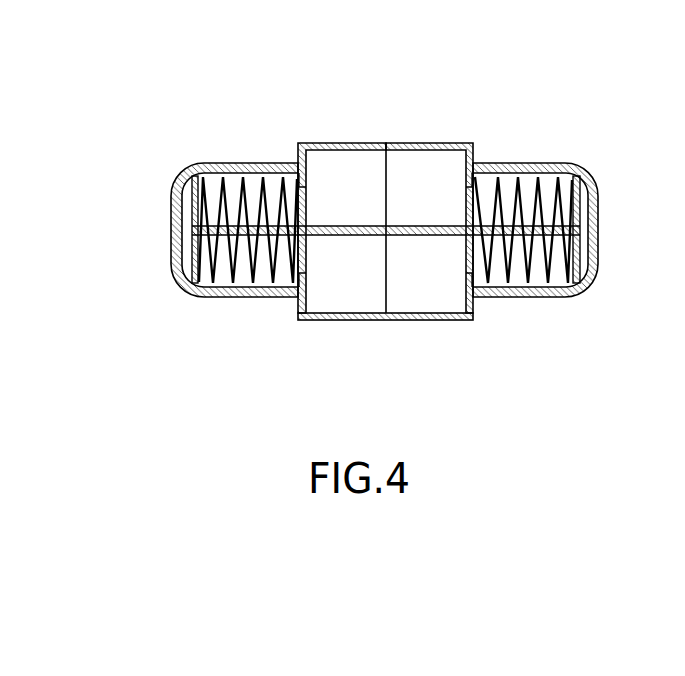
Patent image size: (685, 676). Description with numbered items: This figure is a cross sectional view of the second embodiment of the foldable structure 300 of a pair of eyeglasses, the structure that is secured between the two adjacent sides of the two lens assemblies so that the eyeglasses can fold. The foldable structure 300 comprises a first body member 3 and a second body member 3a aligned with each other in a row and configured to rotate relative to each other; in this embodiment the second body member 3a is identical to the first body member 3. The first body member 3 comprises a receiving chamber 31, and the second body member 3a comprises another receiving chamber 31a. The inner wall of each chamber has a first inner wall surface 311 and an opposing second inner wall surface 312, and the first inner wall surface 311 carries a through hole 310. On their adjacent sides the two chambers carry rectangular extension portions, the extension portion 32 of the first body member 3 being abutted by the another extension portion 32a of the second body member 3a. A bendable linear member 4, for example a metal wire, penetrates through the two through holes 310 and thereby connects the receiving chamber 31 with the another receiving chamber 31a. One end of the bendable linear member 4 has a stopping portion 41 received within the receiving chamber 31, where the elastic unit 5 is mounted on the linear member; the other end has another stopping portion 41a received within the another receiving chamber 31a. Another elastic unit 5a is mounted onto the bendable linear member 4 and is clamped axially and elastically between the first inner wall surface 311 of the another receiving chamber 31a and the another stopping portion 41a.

The foldable structure 300 is at (413, 32).
The first body member 3 is at (511, 131).
The second body member 3a is at (273, 137).
The receiving chamber 31 is at (530, 185).
The another receiving chamber 31a is at (255, 185).
The extension portion 32 is at (425, 149).
The another extension portion 32a is at (348, 144).
The through hole 310 is at (307, 255).
The first inner wall surface 311 is at (292, 285).
The second inner wall surface 312 is at (215, 282).
The bendable linear member 4 is at (402, 212).
The stopping portion 41 is at (578, 208).
The another stopping portion 41a is at (198, 204).
The elastic unit 5 is at (542, 202).
The another elastic unit 5a is at (209, 165).